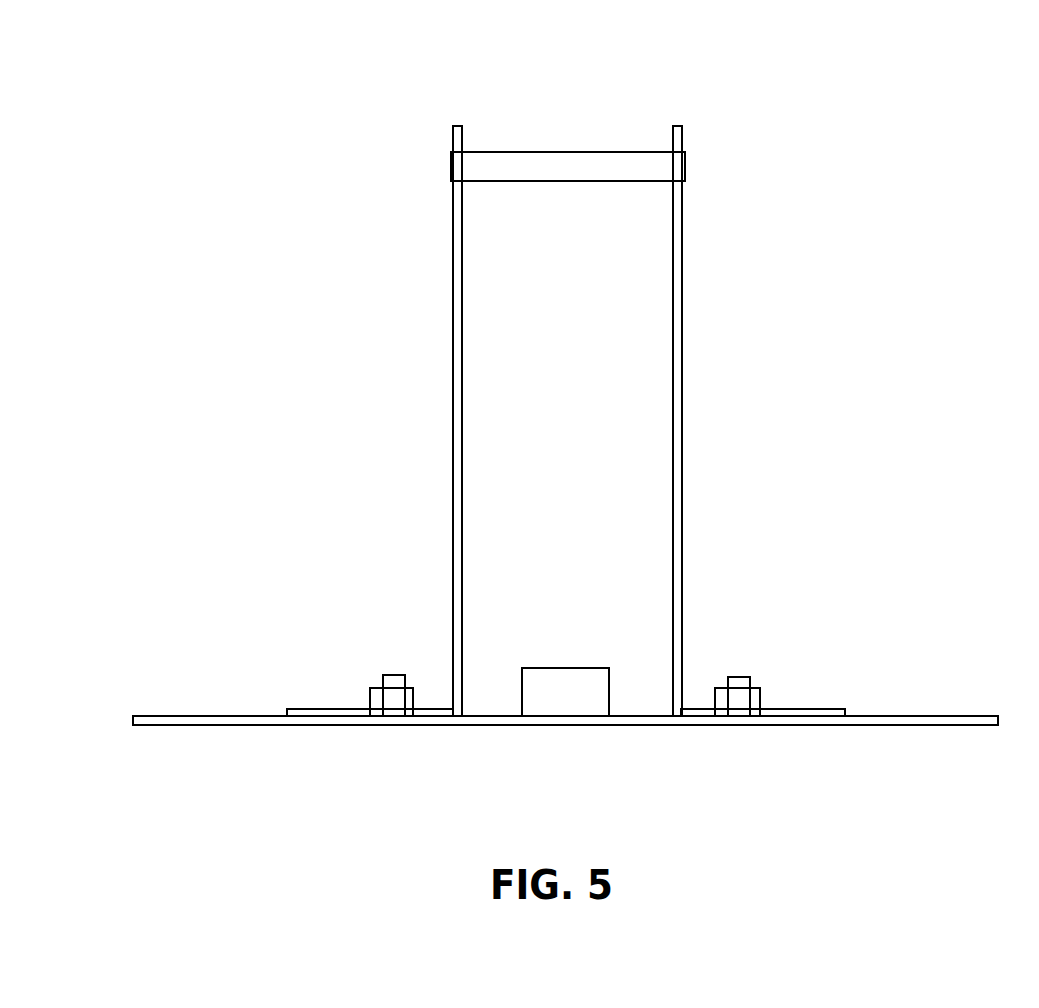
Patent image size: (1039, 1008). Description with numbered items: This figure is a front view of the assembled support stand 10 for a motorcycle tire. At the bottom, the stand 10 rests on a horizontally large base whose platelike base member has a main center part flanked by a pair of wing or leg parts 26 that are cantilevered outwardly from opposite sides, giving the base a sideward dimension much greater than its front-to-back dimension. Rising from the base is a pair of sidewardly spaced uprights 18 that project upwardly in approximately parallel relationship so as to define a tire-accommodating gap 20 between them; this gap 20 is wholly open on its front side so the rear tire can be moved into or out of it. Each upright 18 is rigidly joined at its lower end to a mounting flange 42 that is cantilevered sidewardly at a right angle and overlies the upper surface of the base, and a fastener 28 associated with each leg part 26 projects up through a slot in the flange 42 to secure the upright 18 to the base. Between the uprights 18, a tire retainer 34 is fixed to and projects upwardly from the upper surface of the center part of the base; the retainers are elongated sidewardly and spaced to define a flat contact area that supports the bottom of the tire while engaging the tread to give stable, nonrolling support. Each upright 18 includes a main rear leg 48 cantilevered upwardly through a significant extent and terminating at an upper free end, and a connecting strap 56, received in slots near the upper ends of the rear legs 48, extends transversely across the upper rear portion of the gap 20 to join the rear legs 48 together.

The stand 10 is at (370, 414).
The uprights 18 is at (403, 224).
The tire-accommodating gap 20 is at (634, 421).
The leg parts 26 is at (187, 716).
The fastener 28 is at (390, 675).
The tire retainers 34 is at (595, 676).
The mounting flange 42 is at (309, 709).
The main rear leg 48 is at (680, 334).
The connecting strap 56 is at (580, 160).